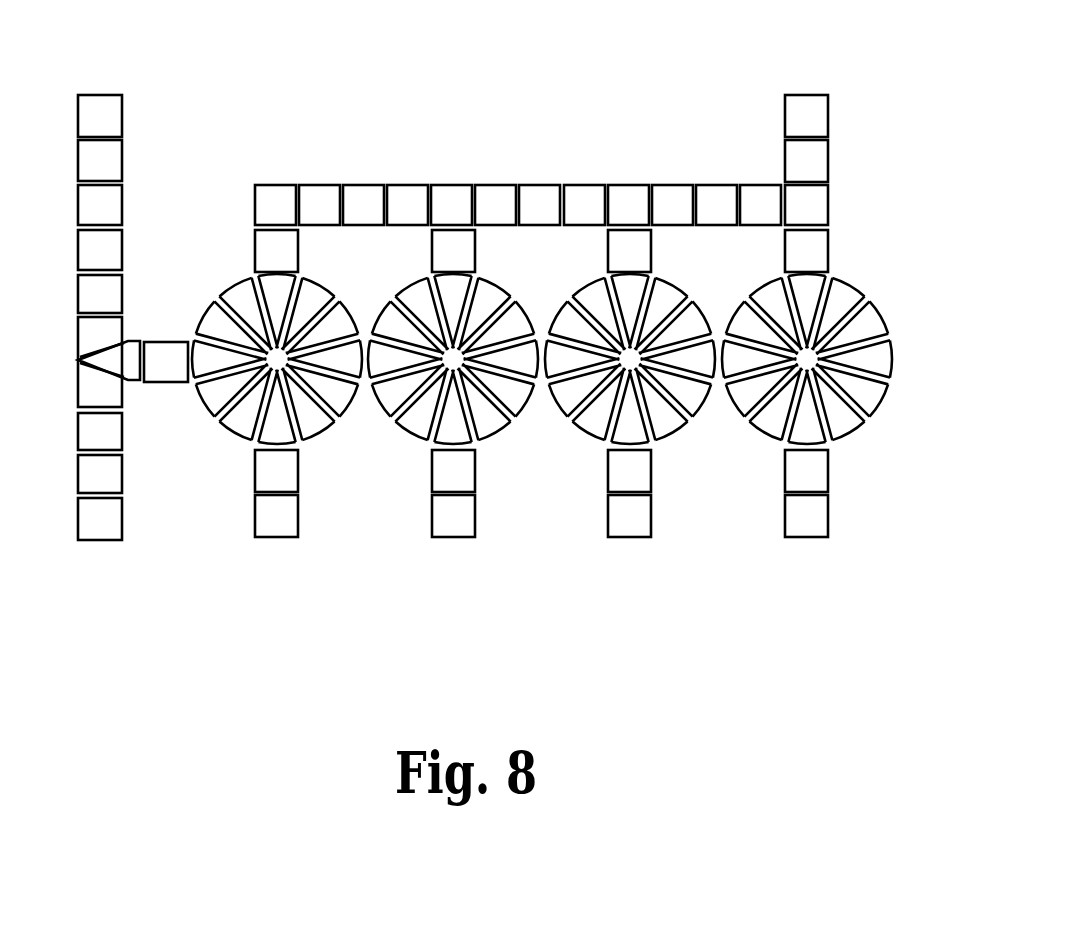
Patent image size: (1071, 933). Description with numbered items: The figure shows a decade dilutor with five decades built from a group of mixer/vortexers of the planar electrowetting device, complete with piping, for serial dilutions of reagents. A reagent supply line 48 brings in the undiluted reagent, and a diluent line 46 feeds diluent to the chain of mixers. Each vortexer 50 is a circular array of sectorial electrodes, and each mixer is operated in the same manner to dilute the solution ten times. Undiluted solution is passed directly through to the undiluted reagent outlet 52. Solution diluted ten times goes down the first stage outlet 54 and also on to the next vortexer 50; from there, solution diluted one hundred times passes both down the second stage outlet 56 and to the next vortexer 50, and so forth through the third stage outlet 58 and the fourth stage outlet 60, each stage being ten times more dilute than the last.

The diluent line 46 is at (782, 113).
The reagent supply line 48 is at (122, 110).
The vortexer 50 is at (228, 443).
The undiluted reagent outlet 52 is at (115, 540).
The first stage outlet 54 is at (292, 540).
The second stage outlet 56 is at (465, 540).
The third stage outlet 58 is at (638, 540).
The fourth stage outlet 60 is at (810, 540).